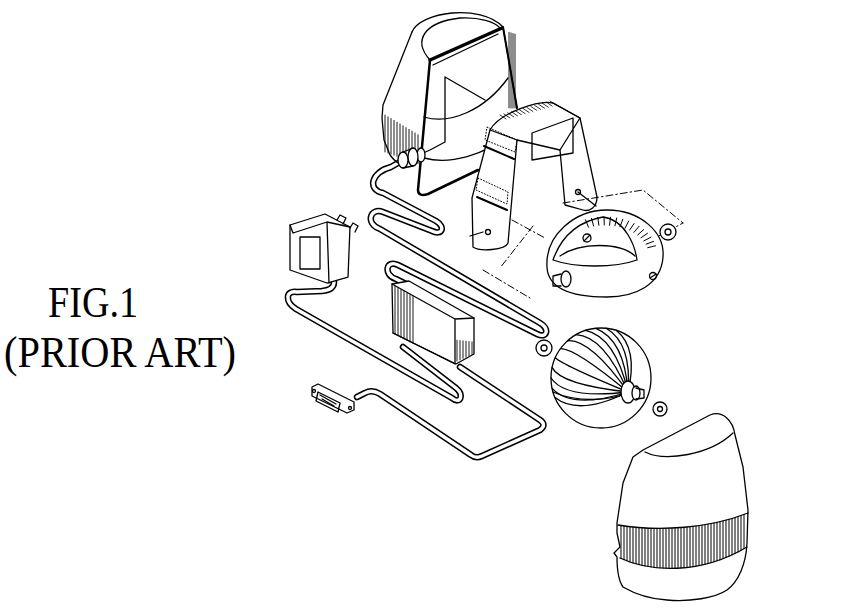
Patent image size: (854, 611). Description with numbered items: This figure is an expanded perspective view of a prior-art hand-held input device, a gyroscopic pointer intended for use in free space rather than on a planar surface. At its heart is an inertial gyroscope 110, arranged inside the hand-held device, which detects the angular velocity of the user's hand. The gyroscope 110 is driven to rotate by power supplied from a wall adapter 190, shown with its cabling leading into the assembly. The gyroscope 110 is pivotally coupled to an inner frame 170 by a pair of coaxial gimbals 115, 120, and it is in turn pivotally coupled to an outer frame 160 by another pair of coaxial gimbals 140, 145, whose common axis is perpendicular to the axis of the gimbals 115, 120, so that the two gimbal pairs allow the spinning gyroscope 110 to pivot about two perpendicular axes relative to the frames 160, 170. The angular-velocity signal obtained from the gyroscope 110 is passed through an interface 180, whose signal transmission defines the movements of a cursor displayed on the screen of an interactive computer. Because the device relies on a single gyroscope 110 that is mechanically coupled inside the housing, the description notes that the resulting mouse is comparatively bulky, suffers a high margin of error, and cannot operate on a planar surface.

The inertial gyroscope 110 is at (584, 426).
The coaxial gimbal 115 is at (548, 341).
The coaxial gimbal 120 is at (638, 410).
The coaxial gimbal 140 is at (557, 288).
The coaxial gimbal 145 is at (670, 240).
The outer frame 160 is at (570, 118).
The inner frame 170 is at (636, 205).
The interface 180 is at (328, 413).
The wall adapter 190 is at (330, 218).